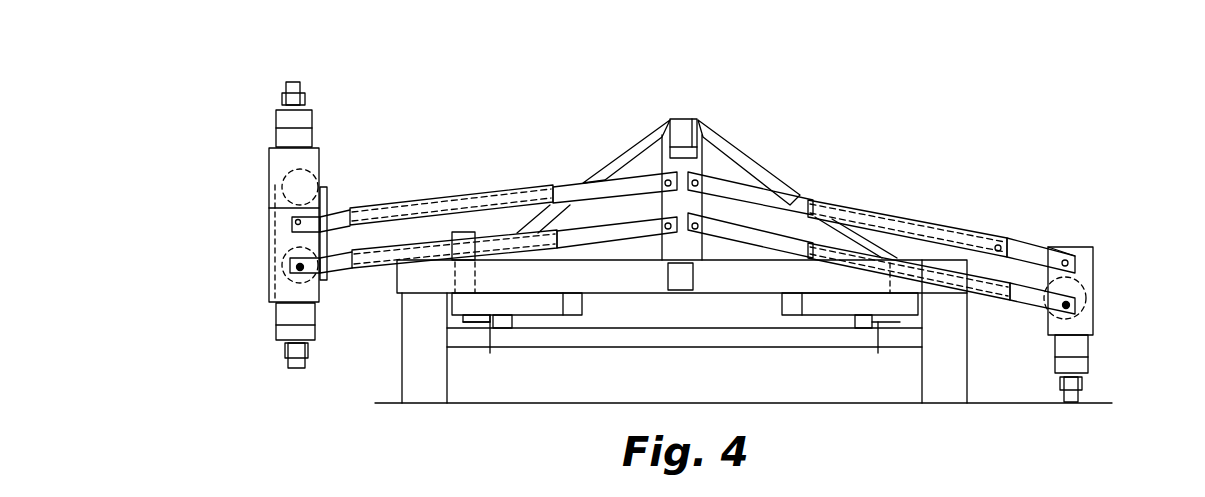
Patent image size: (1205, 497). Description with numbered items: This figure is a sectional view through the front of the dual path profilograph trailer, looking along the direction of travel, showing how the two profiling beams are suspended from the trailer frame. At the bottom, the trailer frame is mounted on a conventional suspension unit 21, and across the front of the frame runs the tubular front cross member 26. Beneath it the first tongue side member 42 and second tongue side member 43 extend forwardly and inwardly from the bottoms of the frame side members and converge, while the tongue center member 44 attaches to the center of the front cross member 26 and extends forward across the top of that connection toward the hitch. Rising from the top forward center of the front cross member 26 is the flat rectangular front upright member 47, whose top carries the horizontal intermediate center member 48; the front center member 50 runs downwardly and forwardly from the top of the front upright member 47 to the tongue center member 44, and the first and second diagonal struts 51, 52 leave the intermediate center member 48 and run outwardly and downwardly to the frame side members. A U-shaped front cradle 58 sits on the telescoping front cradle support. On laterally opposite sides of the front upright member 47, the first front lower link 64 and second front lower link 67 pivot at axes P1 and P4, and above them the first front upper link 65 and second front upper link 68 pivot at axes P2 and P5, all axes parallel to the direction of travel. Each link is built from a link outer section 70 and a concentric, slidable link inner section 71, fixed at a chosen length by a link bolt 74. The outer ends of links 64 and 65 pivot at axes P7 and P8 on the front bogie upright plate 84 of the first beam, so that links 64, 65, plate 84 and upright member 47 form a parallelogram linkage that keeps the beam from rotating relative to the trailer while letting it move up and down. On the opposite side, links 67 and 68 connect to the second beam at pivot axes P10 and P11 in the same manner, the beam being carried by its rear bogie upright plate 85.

The suspension unit 21 is at (640, 383).
The front cross member 26 is at (623, 285).
The first tongue side member 42 is at (832, 317).
The second tongue side member 43 is at (527, 310).
The tongue center member 44 is at (692, 293).
The front upright member 47 is at (703, 162).
The intermediate center member 48 is at (683, 120).
The front center member 50 is at (680, 140).
The first diagonal strut 51 is at (717, 137).
The second diagonal strut 52 is at (620, 153).
The front cradle 58 is at (463, 238).
The first front lower link 64 is at (983, 300).
The first front upper link 65 is at (967, 230).
The second front lower link 67 is at (378, 268).
The second front upper link 68 is at (422, 207).
The link outer section 70 is at (833, 198).
The link inner section 71 is at (1067, 253).
The link bolt 74 is at (1037, 250).
The front bogie upright plate 84 is at (1093, 288).
The rear bogie upright plate 85 is at (270, 170).
The pivot axis P1 is at (700, 232).
The pivot axis P2 is at (728, 183).
The pivot axis P4 is at (655, 238).
The pivot axis P5 is at (625, 180).
The pivot axis P7 is at (1069, 306).
The pivot axis P8 is at (1067, 260).
The pivot axis P10 is at (298, 266).
The pivot axis P11 is at (298, 222).